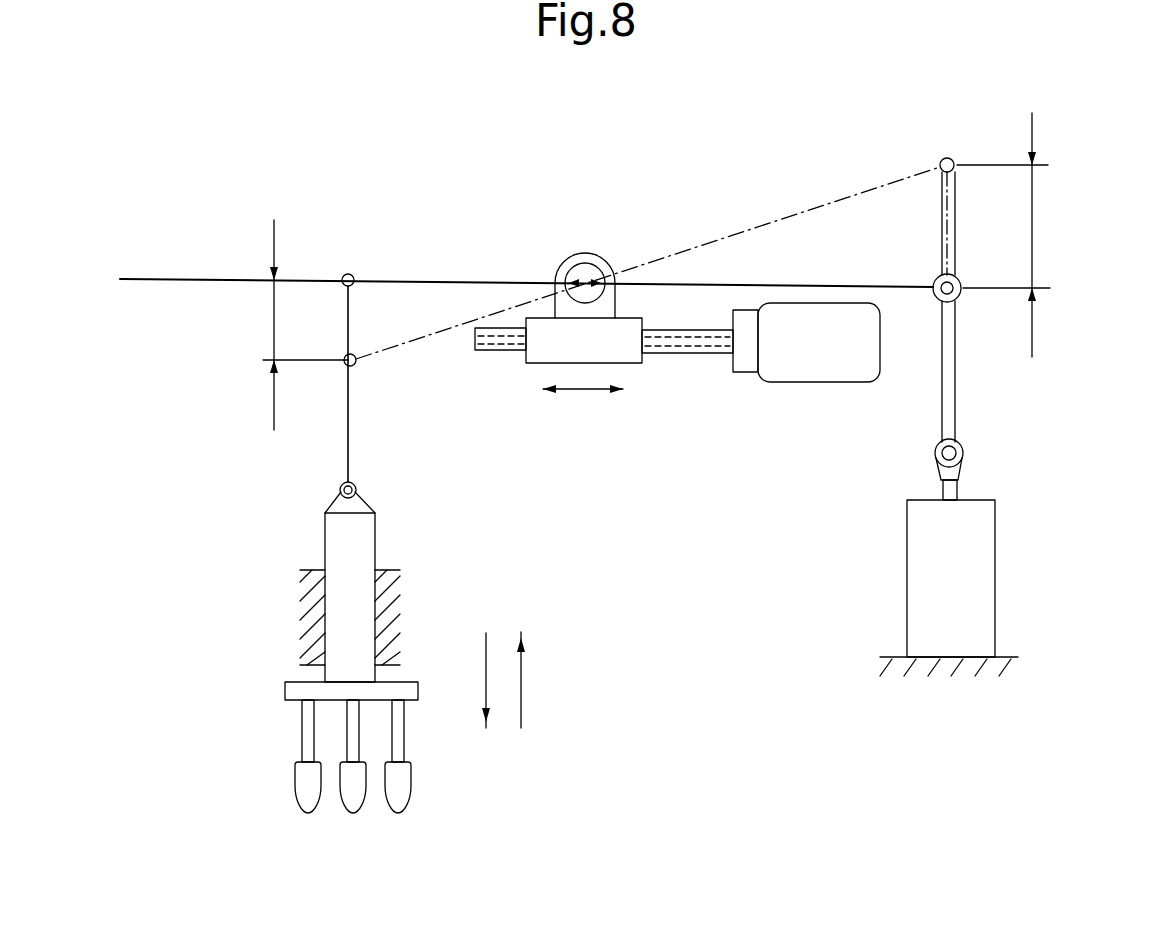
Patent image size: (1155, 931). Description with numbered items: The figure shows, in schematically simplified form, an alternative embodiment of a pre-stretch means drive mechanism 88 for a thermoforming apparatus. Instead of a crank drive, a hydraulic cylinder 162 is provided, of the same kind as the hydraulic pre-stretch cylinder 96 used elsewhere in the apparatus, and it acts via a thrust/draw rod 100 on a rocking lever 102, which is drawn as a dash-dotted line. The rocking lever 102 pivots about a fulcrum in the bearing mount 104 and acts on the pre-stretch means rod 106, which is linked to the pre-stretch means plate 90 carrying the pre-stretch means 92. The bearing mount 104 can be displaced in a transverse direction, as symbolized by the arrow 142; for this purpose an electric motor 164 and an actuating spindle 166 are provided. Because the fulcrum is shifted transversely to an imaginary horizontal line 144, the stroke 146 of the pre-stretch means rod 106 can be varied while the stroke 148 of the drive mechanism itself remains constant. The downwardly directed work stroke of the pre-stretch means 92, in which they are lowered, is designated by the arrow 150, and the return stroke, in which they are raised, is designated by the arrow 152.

The pre-stretch means drive mechanism 88 is at (353, 197).
The imaginary horizontal line 144 is at (143, 279).
The stroke 146 is at (275, 315).
The pre-stretch means rod 106 is at (348, 443).
The rocking lever 102 is at (765, 284).
The bearing mount 104 is at (572, 246).
The arrow 142 is at (587, 392).
The actuating spindle 166 is at (700, 354).
The electric motor 164 is at (822, 365).
The thrust/draw rod 100 is at (957, 392).
The stroke 148 is at (1035, 225).
The hydraulic cylinder 162 is at (1014, 578).
The hydraulic pre-stretch cylinder 96 is at (972, 603).
The arrow 150 is at (485, 655).
The arrow 152 is at (521, 685).
The pre-stretch means plate 90 is at (290, 688).
The pre-stretch means 92 is at (305, 782).